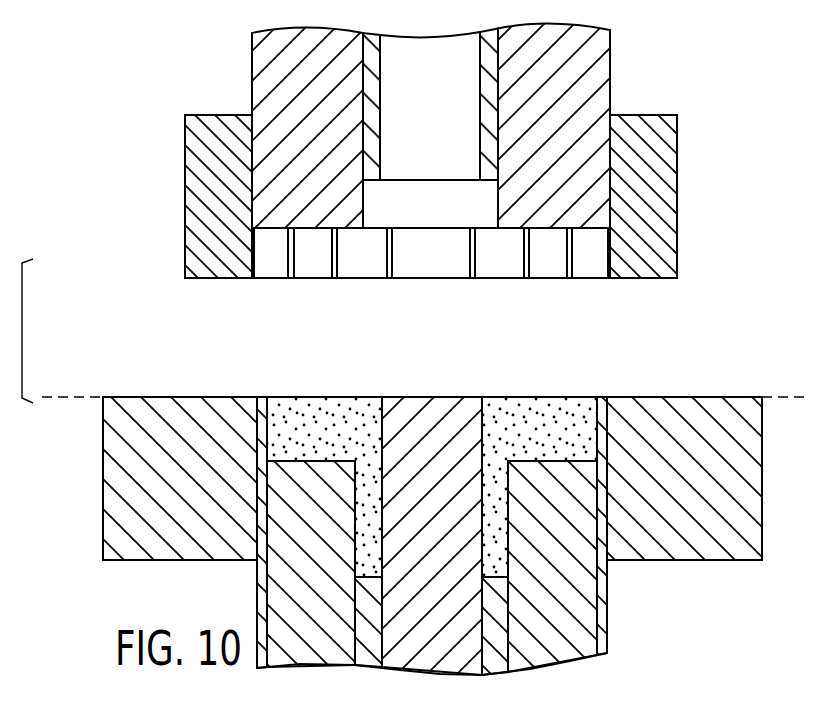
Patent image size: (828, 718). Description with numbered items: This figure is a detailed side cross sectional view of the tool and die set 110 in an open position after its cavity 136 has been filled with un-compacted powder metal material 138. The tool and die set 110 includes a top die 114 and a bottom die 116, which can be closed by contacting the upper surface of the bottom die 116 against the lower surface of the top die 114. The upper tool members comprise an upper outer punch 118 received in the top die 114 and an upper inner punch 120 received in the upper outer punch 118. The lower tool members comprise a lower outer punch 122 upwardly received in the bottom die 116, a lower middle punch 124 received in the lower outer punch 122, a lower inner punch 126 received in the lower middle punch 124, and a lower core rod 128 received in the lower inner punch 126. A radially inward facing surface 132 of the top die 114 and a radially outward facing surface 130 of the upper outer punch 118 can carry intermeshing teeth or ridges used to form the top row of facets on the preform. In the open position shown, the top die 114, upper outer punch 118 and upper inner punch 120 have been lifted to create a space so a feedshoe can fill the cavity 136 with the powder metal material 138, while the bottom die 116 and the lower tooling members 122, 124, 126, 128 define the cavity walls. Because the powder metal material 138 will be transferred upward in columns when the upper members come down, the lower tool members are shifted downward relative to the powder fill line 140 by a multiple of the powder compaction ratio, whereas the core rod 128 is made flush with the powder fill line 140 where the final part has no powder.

The tool and die set 110 is at (409, 163).
The top die 114 is at (679, 186).
The bottom die 116 is at (690, 414).
The upper outer punch 118 is at (259, 52).
The upper inner punch 120 is at (486, 61).
The lower outer punch 122 is at (606, 620).
The lower middle punch 124 is at (583, 584).
The lower inner punch 126 is at (371, 656).
The lower core rod 128 is at (438, 648).
The radially outward facing surface 130 is at (255, 254).
The radially inward facing surface 132 is at (610, 80).
The cavity 136 is at (558, 426).
The powder metal material 138 is at (508, 413).
The powder fill line 140 is at (68, 396).